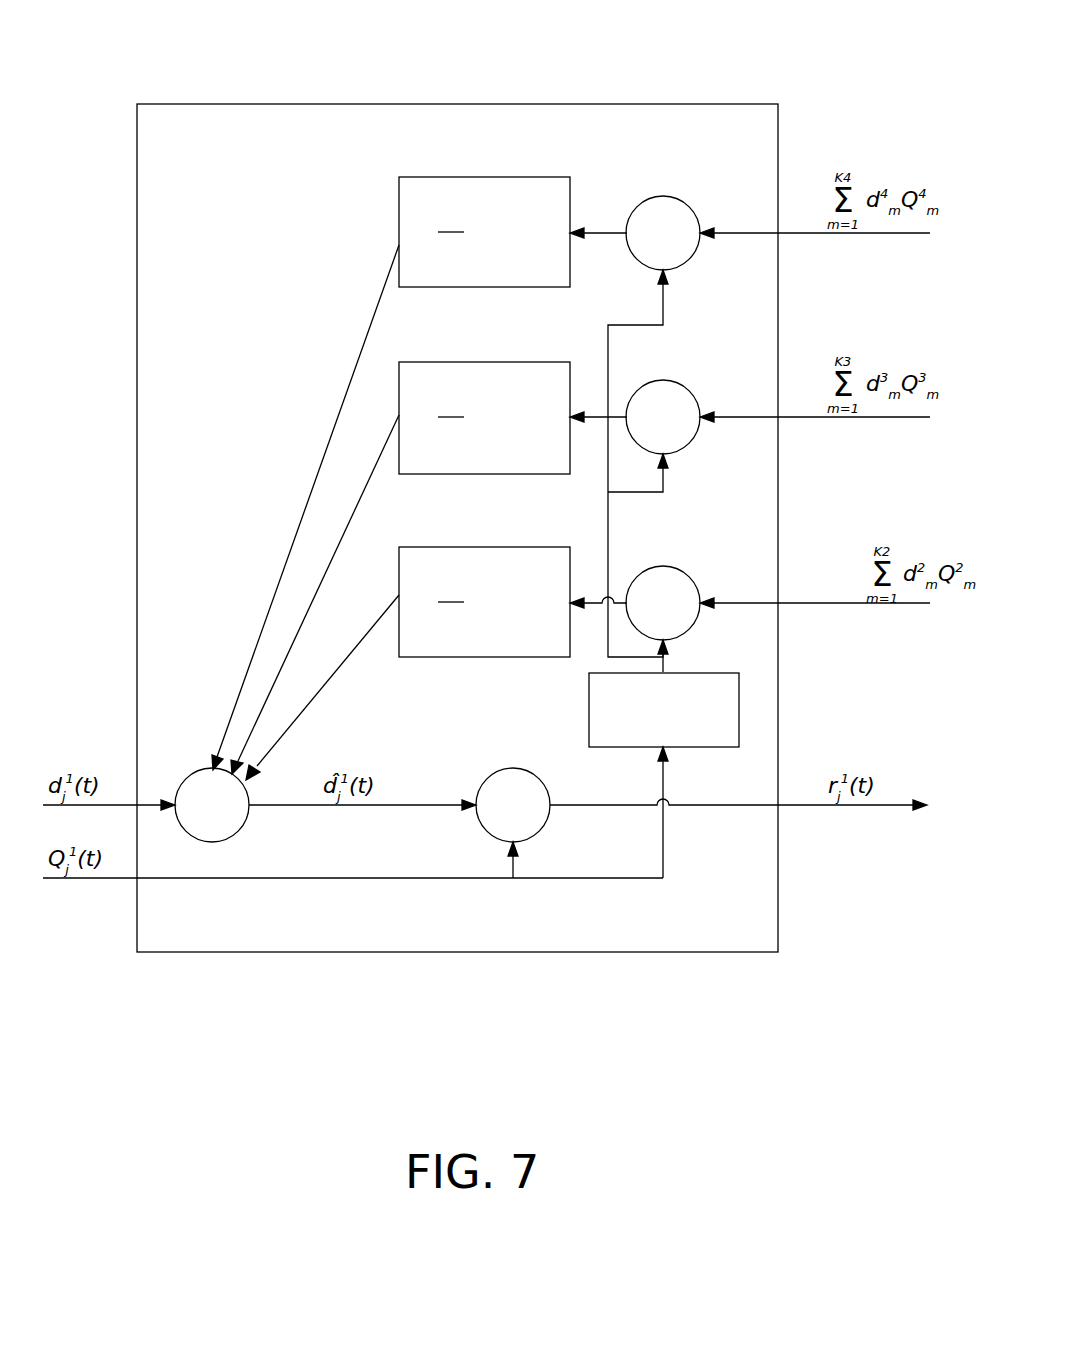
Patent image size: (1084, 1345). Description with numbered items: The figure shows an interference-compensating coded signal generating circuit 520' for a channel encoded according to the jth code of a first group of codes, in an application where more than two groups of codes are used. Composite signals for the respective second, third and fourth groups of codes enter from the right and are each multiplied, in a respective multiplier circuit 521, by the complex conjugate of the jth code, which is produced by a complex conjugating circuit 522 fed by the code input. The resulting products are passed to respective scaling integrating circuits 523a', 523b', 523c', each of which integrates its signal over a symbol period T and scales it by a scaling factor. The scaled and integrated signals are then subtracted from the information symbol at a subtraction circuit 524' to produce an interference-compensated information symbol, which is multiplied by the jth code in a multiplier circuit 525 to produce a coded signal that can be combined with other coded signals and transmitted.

The interference-compensating coded signal generating circuit 520' is at (457, 485).
The multiplier circuit 521 is at (664, 197).
The complex conjugating circuit 522 is at (588, 710).
The scaling integrating circuit 523a' is at (498, 586).
The scaling integrating circuit 523b' is at (498, 402).
The scaling integrating circuit 523c' is at (497, 216).
The subtraction circuit 524' is at (238, 793).
The multiplier circuit 525 is at (510, 768).